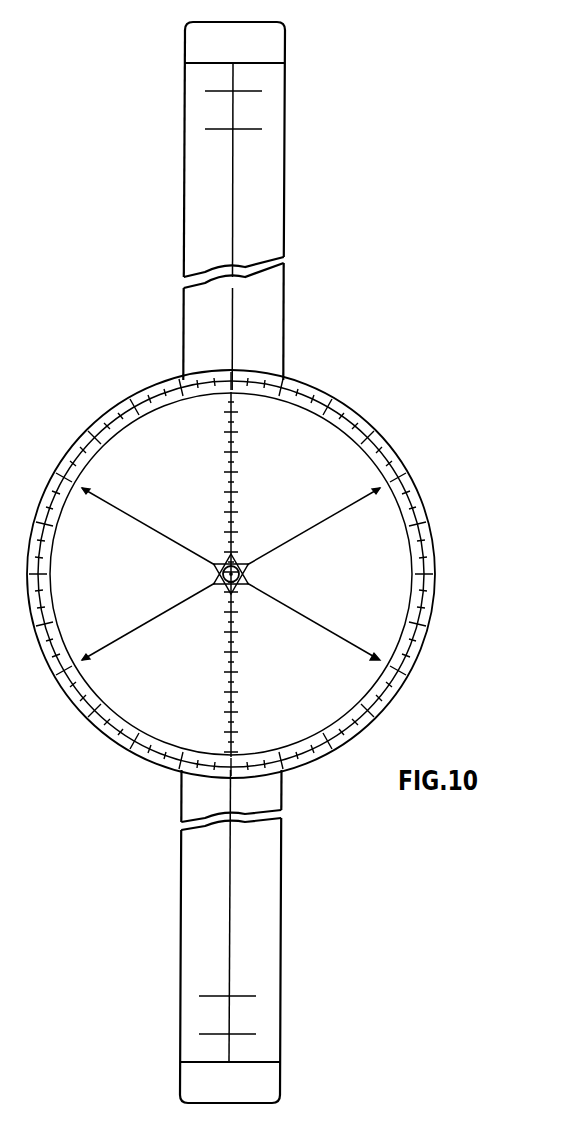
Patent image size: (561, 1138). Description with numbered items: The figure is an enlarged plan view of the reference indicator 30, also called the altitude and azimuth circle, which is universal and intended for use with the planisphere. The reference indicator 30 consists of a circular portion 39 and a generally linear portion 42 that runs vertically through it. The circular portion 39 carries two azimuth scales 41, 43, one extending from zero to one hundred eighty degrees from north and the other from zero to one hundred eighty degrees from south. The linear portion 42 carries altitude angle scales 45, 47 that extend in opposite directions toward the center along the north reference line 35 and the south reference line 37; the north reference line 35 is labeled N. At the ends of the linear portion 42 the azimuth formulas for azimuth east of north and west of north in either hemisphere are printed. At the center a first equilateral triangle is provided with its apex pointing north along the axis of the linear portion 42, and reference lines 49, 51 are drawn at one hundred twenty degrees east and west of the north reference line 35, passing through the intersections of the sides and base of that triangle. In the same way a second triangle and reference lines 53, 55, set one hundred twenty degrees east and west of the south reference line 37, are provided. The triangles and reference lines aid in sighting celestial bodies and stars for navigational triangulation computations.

The reference indicator 30 is at (311, 385).
The north reference line 35 is at (233, 300).
The south reference line 37 is at (229, 862).
The circular portion 39 is at (413, 664).
The azimuth scale 41 is at (428, 596).
The linear portion 42 is at (286, 158).
The azimuth scale 43 is at (50, 584).
The altitude angle scale 45 is at (233, 446).
The altitude angle scale 47 is at (228, 661).
The reference line 49 is at (307, 618).
The reference line 51 is at (181, 603).
The reference line 53 is at (324, 518).
The reference line 55 is at (153, 527).